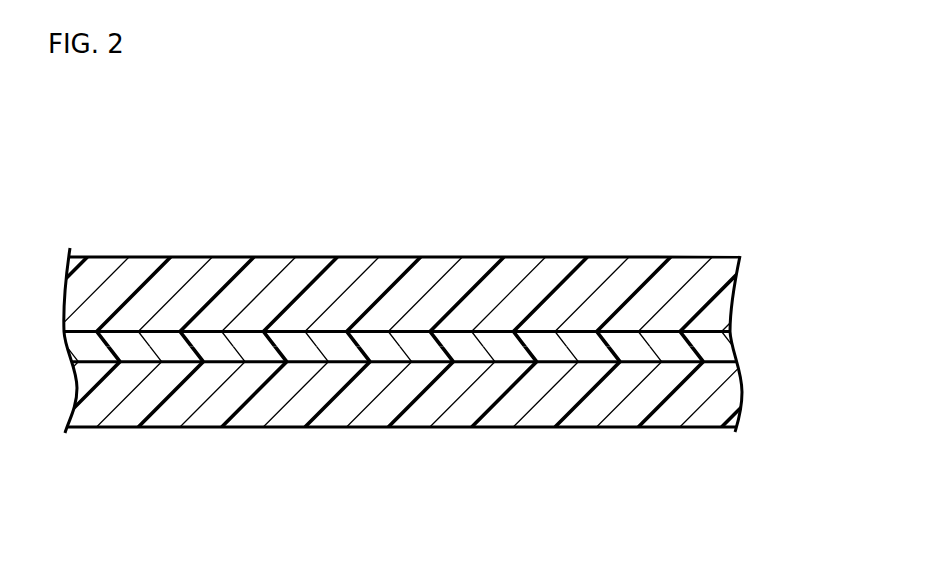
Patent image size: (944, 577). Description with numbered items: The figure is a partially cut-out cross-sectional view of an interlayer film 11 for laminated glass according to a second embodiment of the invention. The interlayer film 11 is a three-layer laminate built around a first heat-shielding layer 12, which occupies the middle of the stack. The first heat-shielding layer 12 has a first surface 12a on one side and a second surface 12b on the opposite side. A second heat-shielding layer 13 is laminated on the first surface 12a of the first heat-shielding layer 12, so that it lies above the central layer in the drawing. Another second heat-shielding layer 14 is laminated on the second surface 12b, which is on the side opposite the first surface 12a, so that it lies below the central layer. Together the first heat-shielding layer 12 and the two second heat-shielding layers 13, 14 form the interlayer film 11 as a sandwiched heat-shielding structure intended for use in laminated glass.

The interlayer film 11 is at (460, 314).
The first heat-shielding layer 12 is at (438, 348).
The first surface 12a is at (542, 348).
The second surface 12b is at (542, 348).
The second heat-shielding layer 13 is at (748, 295).
The second heat-shielding layer 14 is at (750, 402).